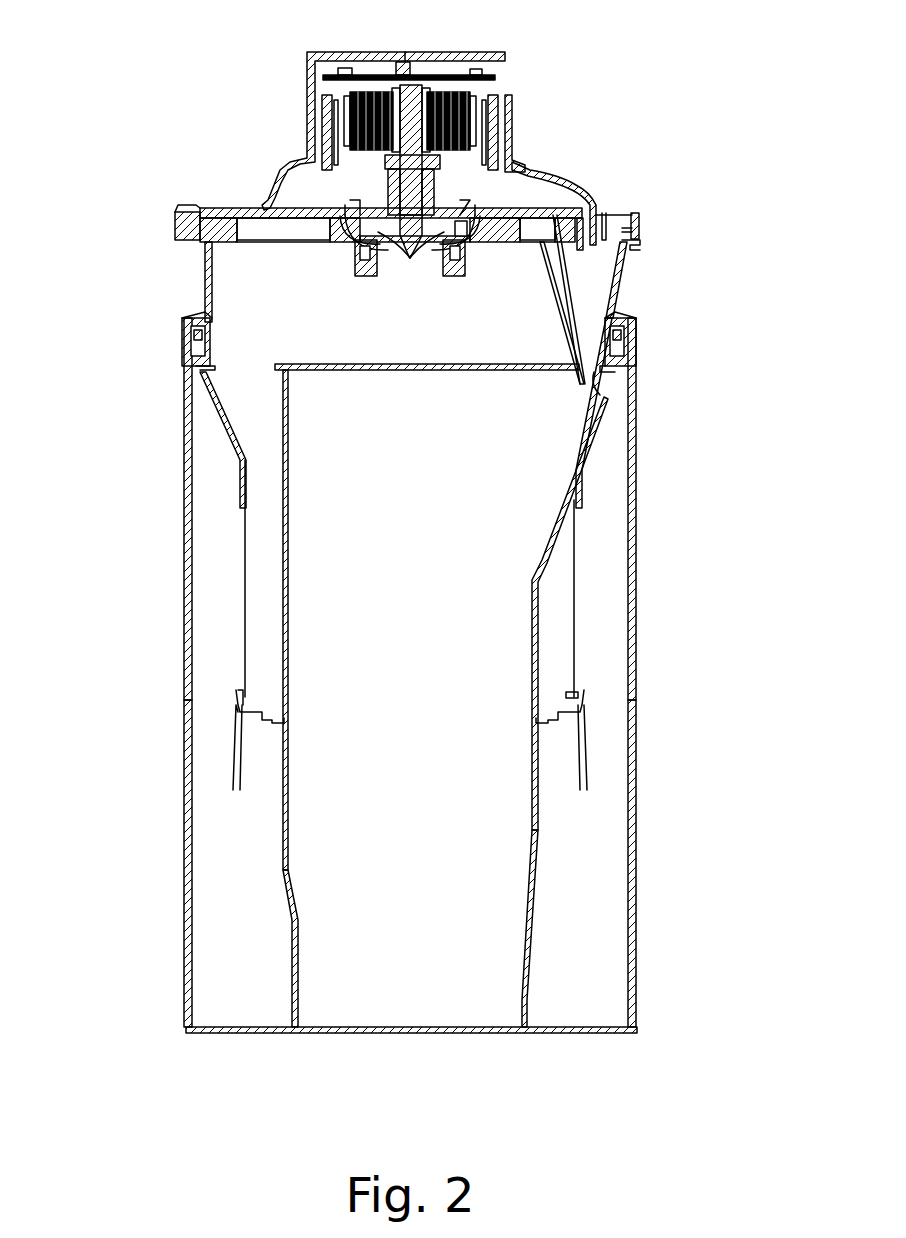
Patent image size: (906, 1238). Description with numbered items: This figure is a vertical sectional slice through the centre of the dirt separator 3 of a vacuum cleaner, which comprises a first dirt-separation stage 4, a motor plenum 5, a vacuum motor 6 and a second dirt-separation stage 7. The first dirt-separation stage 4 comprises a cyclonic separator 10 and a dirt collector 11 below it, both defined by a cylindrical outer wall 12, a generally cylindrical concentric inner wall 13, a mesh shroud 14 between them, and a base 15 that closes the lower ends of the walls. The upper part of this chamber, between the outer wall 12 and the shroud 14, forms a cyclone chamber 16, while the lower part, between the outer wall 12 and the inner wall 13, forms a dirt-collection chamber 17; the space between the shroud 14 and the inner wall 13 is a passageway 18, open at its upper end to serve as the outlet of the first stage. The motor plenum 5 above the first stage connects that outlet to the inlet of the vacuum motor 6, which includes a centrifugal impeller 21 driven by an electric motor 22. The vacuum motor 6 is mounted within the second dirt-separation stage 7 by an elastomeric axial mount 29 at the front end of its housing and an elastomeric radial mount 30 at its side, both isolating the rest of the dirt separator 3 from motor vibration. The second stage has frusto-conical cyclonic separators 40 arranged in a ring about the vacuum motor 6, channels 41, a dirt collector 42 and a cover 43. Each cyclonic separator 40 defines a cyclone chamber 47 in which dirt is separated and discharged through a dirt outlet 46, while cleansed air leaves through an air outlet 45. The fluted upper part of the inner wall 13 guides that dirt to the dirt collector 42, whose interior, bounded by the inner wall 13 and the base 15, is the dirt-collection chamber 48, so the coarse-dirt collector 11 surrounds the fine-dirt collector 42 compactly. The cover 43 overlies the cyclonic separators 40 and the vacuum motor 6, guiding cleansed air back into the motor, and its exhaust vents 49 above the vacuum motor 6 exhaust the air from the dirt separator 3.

The dirt separator 3 is at (118, 127).
The first dirt-separation stage 4 is at (185, 432).
The motor plenum 5 is at (255, 290).
The vacuum motor 6 is at (333, 118).
The second dirt-separation stage 7 is at (278, 178).
The cyclonic separator 10 is at (637, 518).
The dirt collector 11 is at (637, 896).
The outer wall 12 is at (185, 825).
The inner wall 13 is at (290, 917).
The shroud 14 is at (250, 612).
The base 15 is at (582, 1035).
The cyclone chamber 16 is at (597, 605).
The dirt-collection chamber 17 is at (572, 963).
The passageway 18 is at (250, 540).
The impeller 21 is at (416, 262).
The electric motor 22 is at (489, 118).
The axial mount 29 is at (370, 272).
The radial mount 30 is at (513, 148).
The cyclonic separators 40 is at (630, 262).
The channels 41 is at (300, 240).
The dirt collector 42 is at (530, 823).
The cover 43 is at (596, 190).
The air outlet 45 is at (640, 230).
The dirt outlet 46 is at (600, 387).
The cyclone chamber 47 is at (593, 300).
The dirt-collection chamber 48 is at (394, 992).
The exhaust vents 49 is at (508, 76).